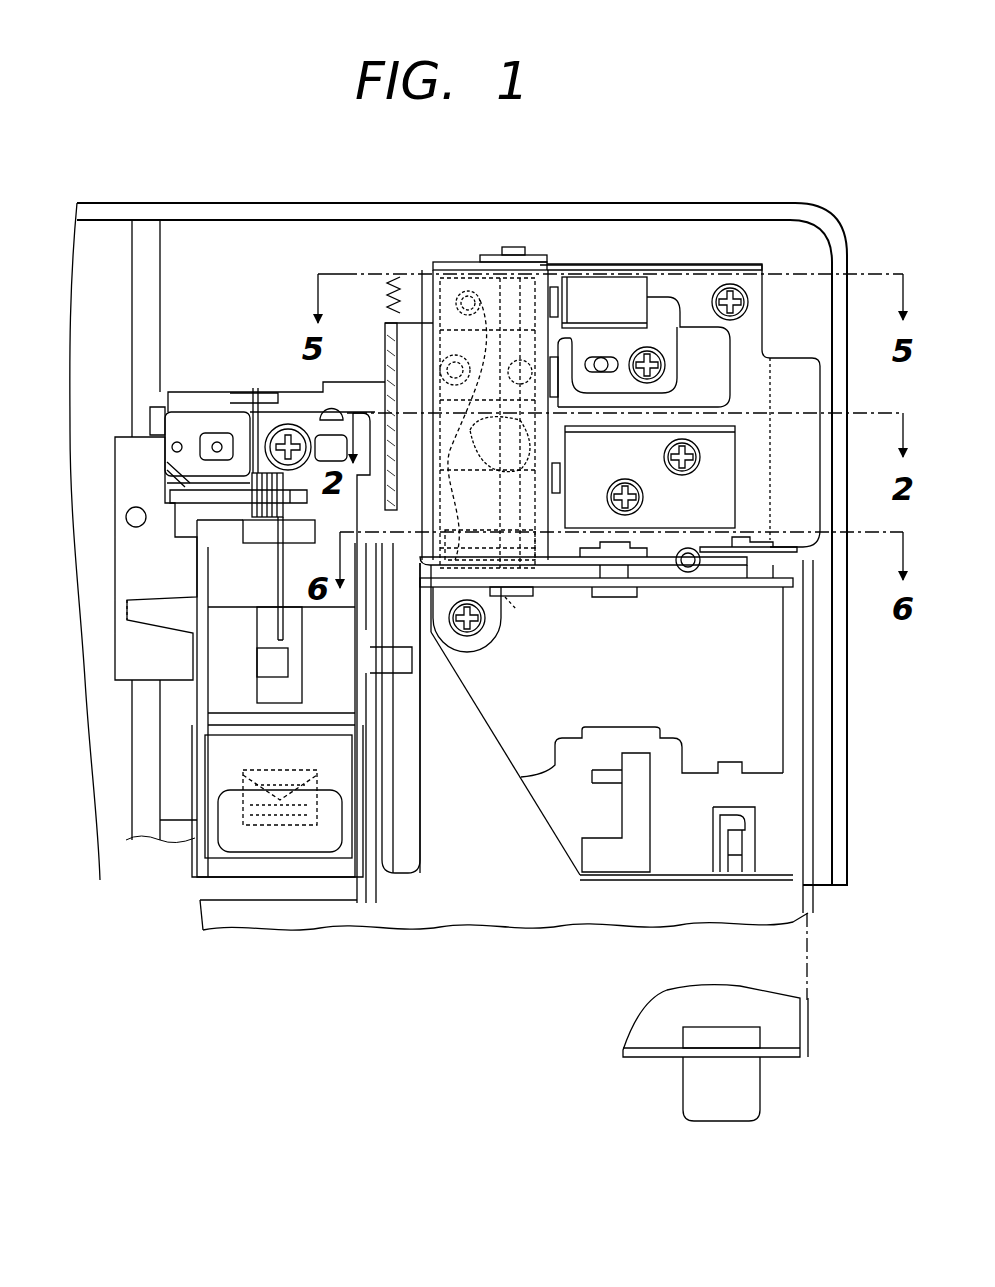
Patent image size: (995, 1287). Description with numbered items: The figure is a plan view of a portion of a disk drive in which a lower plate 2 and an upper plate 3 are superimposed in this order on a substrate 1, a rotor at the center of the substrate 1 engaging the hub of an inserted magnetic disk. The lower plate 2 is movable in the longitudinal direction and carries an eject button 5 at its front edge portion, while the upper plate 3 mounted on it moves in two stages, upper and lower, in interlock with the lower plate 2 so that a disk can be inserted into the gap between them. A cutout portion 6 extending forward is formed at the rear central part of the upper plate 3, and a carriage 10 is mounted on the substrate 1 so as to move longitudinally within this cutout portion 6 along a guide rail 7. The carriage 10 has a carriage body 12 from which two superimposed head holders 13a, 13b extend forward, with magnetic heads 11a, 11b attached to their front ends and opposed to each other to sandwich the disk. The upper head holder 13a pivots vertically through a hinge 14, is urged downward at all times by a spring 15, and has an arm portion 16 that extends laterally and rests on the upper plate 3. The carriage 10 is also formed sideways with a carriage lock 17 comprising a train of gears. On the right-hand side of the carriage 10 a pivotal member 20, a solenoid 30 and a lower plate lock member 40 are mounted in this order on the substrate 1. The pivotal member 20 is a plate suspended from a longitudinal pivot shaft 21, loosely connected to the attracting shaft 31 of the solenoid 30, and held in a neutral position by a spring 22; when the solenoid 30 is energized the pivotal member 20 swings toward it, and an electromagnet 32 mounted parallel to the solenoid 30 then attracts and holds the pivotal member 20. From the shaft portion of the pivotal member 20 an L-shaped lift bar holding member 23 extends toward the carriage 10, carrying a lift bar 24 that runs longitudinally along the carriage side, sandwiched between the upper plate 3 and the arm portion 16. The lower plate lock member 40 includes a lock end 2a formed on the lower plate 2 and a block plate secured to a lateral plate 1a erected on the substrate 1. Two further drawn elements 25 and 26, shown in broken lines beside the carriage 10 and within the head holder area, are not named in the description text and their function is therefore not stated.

The substrate 1 is at (207, 240).
The lateral plate 1a is at (685, 588).
The lower plate 2 is at (783, 792).
The lock end 2a is at (797, 562).
The upper plate 3 is at (487, 910).
The eject button 5 is at (688, 1092).
The cutout portion 6 is at (268, 898).
The guide rail 7 is at (150, 284).
The carriage 10 is at (187, 398).
The magnetic head 11a is at (257, 815).
The magnetic head 11b is at (253, 825).
The carriage body 12 is at (193, 427).
The upper head holder 13a is at (193, 733).
The lower head holder 13b is at (205, 745).
The hinge 14 is at (257, 540).
The spring 15 is at (253, 507).
The arm portion 16 is at (420, 660).
The carriage lock 17 is at (395, 290).
The pivotal member 20 is at (557, 272).
The pivot shaft 21 is at (513, 250).
The spring 22 is at (517, 610).
The lift bar holding member 23 is at (443, 545).
The lift bar 24 is at (408, 838).
The cartridge 25 is at (415, 330).
The holder 26 is at (417, 513).
The solenoid 30 is at (717, 446).
The attracting shaft 31 is at (560, 478).
The electromagnet 32 is at (612, 290).
The lower plate lock member 40 is at (782, 513).